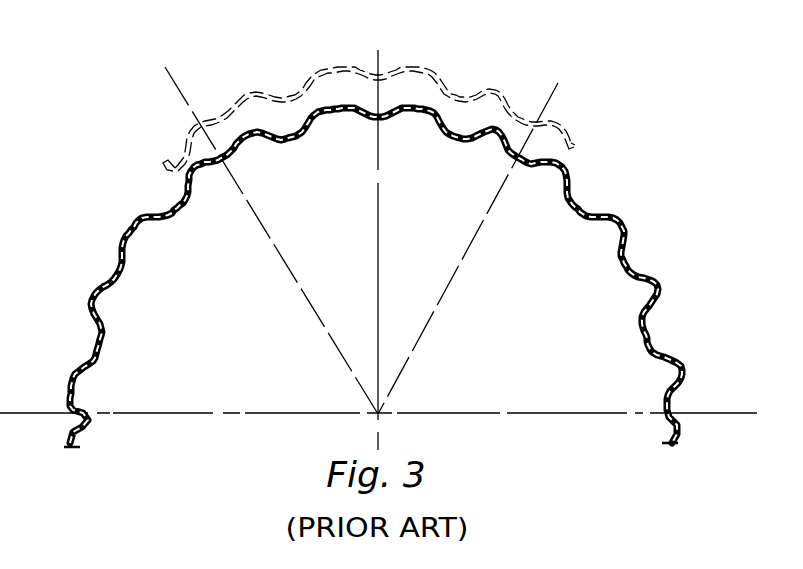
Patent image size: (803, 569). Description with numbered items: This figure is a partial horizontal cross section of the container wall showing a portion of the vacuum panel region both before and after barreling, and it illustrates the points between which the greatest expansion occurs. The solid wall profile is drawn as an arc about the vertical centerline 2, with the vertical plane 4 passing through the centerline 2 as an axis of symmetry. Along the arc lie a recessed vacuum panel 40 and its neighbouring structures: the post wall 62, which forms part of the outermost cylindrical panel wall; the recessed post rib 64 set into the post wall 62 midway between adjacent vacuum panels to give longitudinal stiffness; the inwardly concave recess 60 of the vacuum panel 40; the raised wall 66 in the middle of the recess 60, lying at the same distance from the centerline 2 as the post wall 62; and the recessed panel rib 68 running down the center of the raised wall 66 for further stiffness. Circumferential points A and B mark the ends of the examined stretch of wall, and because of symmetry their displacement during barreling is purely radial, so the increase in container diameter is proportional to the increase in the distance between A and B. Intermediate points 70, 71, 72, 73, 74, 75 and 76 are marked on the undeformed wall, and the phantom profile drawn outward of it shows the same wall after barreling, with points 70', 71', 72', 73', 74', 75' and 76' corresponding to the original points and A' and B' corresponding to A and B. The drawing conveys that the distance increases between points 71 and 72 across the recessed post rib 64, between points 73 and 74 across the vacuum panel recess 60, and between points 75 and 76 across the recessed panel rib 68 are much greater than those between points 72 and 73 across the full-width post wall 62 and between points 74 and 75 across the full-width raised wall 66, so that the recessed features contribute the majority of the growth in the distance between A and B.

The vertical centerline 2 is at (376, 411).
The vertical plane 4 is at (720, 413).
The vacuum panel 40 is at (662, 271).
The recess 60 is at (275, 97).
The post wall 62 is at (176, 139).
The post rib 64 is at (605, 97).
The raised wall 66 is at (344, 66).
The panel rib 68 is at (384, 64).
The point 70 is at (155, 179).
The point 70' is at (338, 119).
The point 71 is at (195, 204).
The point 71' is at (170, 102).
The point 72 is at (265, 181).
The point 72' is at (225, 74).
The point 73 is at (305, 171).
The point 73' is at (277, 62).
The point 74 is at (325, 146).
The point 74' is at (321, 44).
The point 75 is at (358, 131).
The point 75' is at (373, 40).
The point 76 is at (430, 139).
The point 76' is at (426, 35).
The circumferential point A is at (215, 184).
The circumferential point A' is at (194, 78).
The circumferential point B is at (393, 142).
The circumferential point B' is at (442, 49).